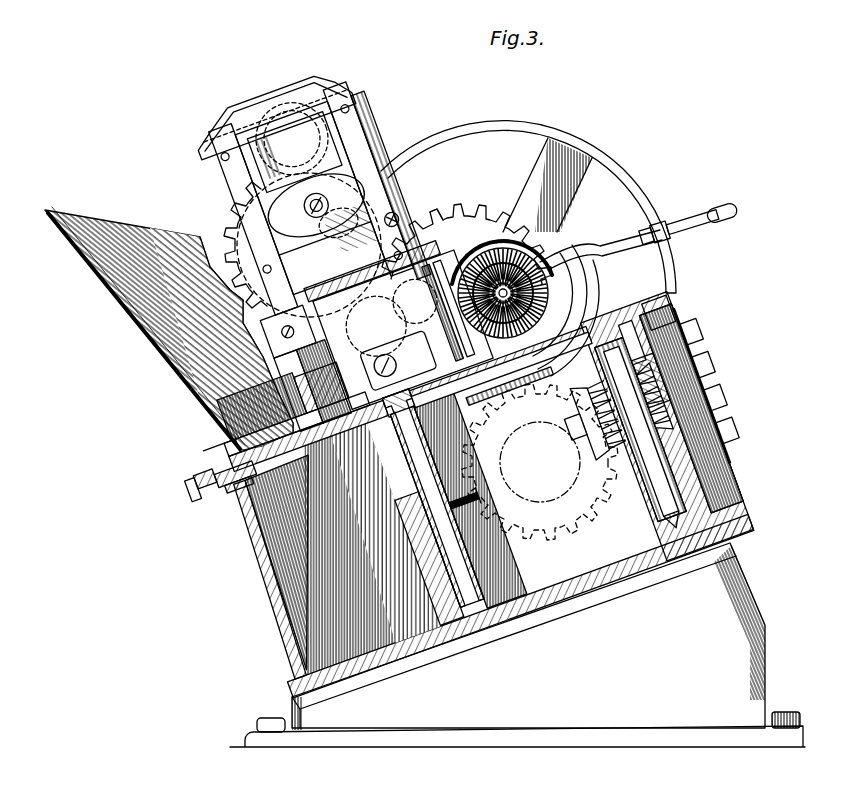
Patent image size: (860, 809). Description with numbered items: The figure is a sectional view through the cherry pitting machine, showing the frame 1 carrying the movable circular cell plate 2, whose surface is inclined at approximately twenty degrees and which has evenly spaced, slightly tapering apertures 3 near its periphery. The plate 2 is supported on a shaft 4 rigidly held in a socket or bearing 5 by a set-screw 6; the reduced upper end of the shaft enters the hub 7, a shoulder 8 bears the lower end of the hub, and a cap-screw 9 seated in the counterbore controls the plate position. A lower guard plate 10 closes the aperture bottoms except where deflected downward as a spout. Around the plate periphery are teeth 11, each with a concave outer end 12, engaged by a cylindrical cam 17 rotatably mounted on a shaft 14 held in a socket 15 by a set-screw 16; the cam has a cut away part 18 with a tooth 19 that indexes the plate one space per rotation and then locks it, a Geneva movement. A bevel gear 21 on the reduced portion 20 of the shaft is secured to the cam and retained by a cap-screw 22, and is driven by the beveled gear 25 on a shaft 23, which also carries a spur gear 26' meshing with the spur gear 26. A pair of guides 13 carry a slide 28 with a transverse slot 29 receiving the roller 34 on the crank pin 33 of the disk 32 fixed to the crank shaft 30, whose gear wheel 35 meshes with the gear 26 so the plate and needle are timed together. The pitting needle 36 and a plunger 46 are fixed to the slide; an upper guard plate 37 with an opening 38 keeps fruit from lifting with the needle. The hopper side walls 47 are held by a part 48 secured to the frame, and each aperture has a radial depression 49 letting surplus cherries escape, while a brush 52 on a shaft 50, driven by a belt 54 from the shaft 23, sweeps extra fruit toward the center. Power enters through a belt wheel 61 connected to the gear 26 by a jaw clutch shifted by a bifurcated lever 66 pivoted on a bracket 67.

The frame 1 is at (290, 598).
The cell plate 2 is at (335, 417).
The apertures 3 is at (230, 500).
The shaft 4 is at (427, 465).
The socket or bearing 5 is at (413, 567).
The set-screw 6 is at (483, 503).
The hub 7 is at (397, 450).
The shoulder 8 is at (402, 463).
The cap-screw 9 is at (350, 417).
The guard plate 10 is at (240, 517).
The teeth 11 is at (217, 453).
The concave portion 12 is at (203, 488).
The guides 13 is at (222, 145).
The shaft 14 is at (723, 377).
The bearing or socket 15 is at (727, 457).
The set-screw 16 is at (643, 563).
The cylindrical cam 17 is at (665, 293).
The cut away part 18 is at (620, 248).
The tooth 19 is at (540, 462).
The reduced portion 20 is at (660, 338).
The bevel gear 21 is at (690, 340).
The cap-screw 22 is at (570, 333).
The shaft 23 is at (712, 398).
The beveled gear 25 is at (712, 355).
The spur gear 26 is at (463, 198).
The spur gear 26' is at (730, 386).
The slide 28 is at (293, 90).
The transverse slot 29 is at (377, 167).
The crank shaft 30 is at (403, 202).
The disk 32 is at (295, 218).
The crank pin 33 is at (317, 195).
The roller 34 is at (279, 156).
The gear wheel 35 is at (267, 247).
The pitting needle 36 is at (383, 308).
The upper guard plate 37 is at (390, 352).
The opening 38 is at (437, 417).
The plunger 46 is at (283, 343).
The side walls 47 is at (100, 283).
The part 48 is at (213, 475).
The radial depression 49 is at (233, 438).
The shaft 50 is at (562, 235).
The brush 52 is at (497, 253).
The belt or band 54 is at (512, 289).
The belt wheel 61 is at (515, 130).
The bifurcated lever 66 is at (693, 207).
The bracket 67 is at (603, 243).